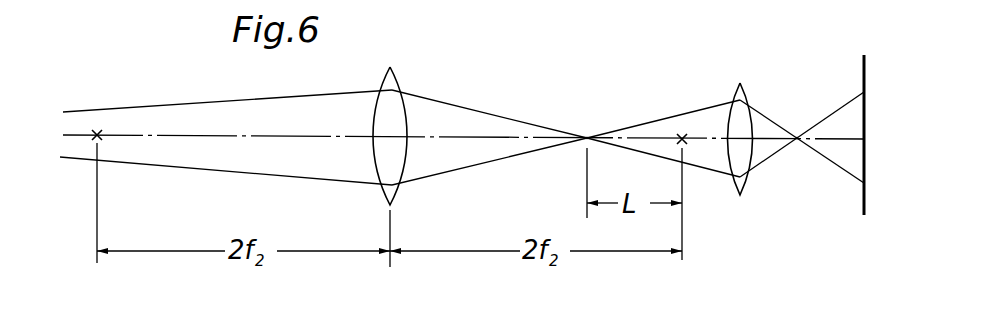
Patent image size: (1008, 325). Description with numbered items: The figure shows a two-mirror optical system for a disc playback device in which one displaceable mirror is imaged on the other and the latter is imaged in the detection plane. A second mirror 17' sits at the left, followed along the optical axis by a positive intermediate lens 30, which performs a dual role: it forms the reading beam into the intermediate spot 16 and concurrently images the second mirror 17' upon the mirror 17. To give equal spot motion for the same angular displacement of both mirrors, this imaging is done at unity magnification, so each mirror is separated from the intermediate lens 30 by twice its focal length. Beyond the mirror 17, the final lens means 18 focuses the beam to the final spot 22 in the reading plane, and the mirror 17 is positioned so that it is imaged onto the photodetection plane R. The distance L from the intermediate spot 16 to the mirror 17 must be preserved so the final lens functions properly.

The intermediate spot 16 is at (587, 132).
The mirror 17 is at (693, 113).
The second mirror 17' is at (124, 105).
The final lens means 18 is at (747, 100).
The final spot 22 is at (797, 140).
The intermediate lens 30 is at (398, 82).
The photodetection plane R is at (864, 75).